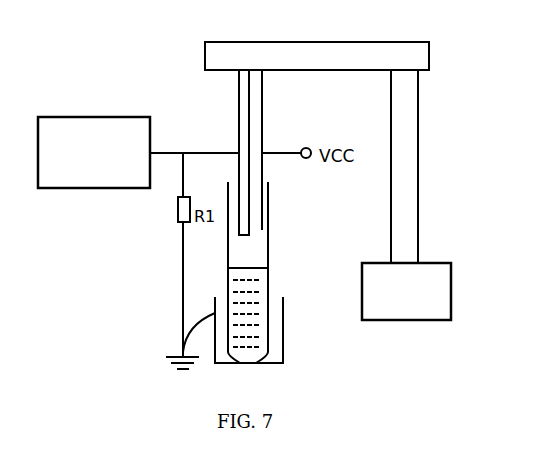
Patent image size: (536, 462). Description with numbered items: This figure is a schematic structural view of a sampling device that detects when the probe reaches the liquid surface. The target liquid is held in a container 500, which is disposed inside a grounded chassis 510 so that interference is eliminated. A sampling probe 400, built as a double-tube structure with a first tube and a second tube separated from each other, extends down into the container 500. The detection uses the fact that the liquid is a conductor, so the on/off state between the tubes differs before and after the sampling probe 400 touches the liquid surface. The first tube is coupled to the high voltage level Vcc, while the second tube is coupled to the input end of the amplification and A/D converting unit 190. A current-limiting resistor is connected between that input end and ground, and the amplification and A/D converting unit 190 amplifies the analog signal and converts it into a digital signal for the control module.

The amplification and A/D converting unit 190 is at (94, 152).
The sampling probe 400 is at (238, 103).
The container 500 is at (262, 223).
The grounded chassis 510 is at (283, 352).